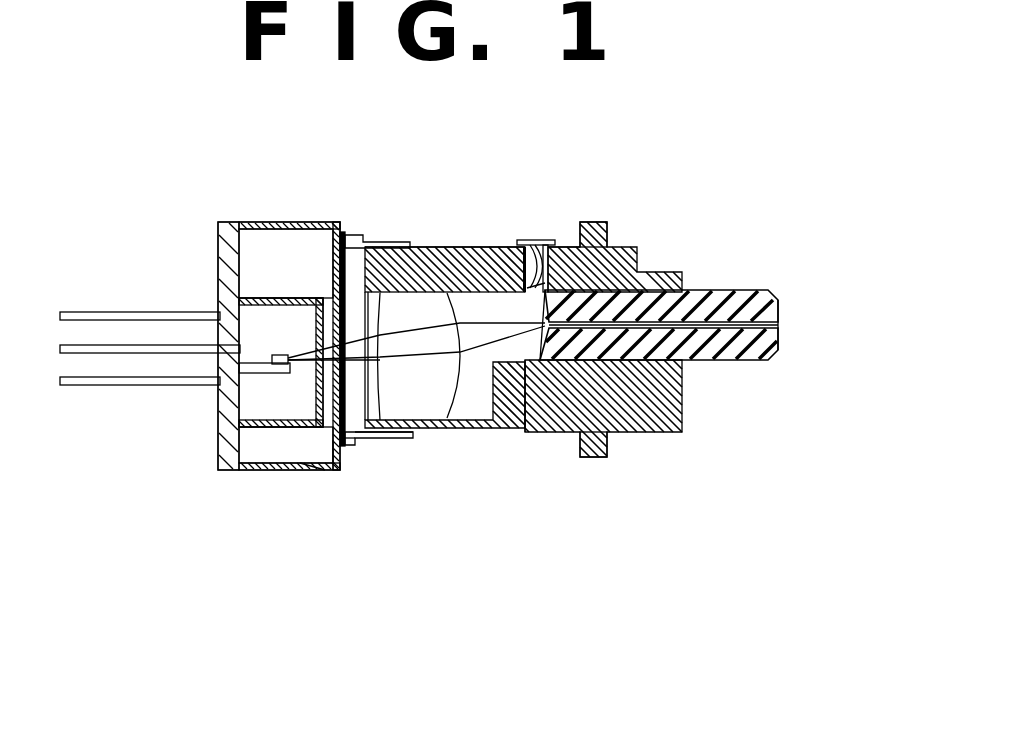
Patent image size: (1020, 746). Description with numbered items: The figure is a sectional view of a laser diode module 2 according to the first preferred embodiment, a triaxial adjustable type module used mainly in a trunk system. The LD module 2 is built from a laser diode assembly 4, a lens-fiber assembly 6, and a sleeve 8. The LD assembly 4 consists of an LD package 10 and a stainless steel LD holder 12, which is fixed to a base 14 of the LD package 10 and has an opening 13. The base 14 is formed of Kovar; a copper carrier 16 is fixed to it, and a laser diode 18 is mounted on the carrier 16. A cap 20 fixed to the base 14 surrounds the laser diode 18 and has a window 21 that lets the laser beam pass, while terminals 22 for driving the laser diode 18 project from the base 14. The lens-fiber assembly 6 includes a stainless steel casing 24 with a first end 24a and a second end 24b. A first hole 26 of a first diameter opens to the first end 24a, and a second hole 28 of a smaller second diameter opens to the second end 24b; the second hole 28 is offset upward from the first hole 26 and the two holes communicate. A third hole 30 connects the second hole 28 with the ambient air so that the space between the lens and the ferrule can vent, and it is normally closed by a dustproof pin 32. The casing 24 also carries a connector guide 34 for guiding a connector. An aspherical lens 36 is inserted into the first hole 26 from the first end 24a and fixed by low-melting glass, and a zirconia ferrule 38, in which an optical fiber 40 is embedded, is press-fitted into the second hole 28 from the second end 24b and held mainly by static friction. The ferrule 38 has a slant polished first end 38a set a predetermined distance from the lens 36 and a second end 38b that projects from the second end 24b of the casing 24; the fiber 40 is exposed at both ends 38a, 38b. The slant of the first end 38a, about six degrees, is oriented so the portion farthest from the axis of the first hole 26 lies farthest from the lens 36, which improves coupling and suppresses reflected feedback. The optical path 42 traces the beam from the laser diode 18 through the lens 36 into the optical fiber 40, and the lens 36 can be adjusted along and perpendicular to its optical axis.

The laser diode module 2 is at (452, 243).
The laser diode assembly 4 is at (278, 216).
The lens-fiber assembly 6 is at (580, 207).
The sleeve 8 is at (357, 241).
The LD package 10 is at (265, 434).
The LD holder 12 is at (326, 470).
The opening 13 is at (358, 441).
The base 14 is at (220, 456).
The carrier 16 is at (268, 386).
The laser diode 18 is at (280, 354).
The cap 20 is at (252, 300).
The window 21 is at (312, 465).
The terminals 22 is at (85, 312).
The casing 24 is at (560, 432).
The first end 24a is at (360, 437).
The second end 24b is at (672, 272).
The first hole 26 is at (480, 423).
The second hole 28 is at (524, 362).
The third hole 30 is at (525, 246).
The dustproof pin 32 is at (548, 243).
The connector guide 34 is at (597, 458).
The lens 36 is at (410, 317).
The ferrule 38 is at (752, 290).
The first end 38a is at (542, 361).
The second end 38b is at (779, 338).
The optical fiber 40 is at (745, 330).
The optical path 42 is at (423, 360).